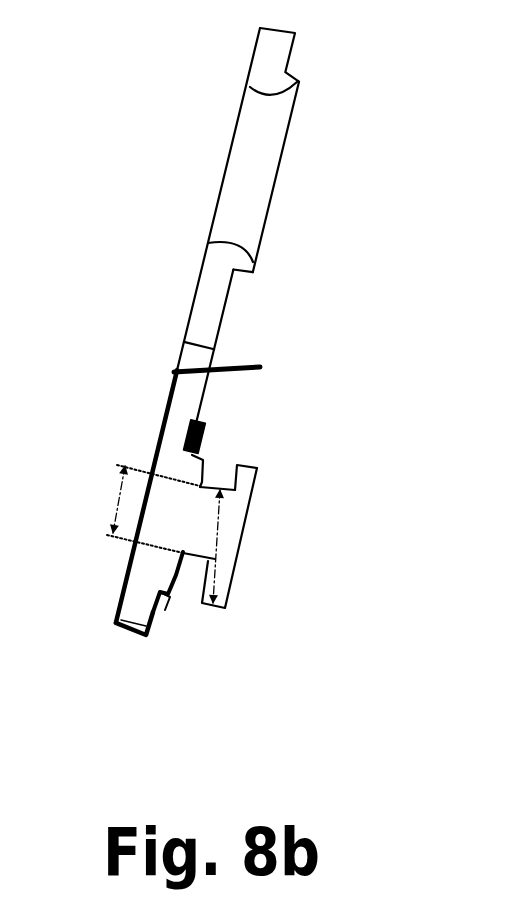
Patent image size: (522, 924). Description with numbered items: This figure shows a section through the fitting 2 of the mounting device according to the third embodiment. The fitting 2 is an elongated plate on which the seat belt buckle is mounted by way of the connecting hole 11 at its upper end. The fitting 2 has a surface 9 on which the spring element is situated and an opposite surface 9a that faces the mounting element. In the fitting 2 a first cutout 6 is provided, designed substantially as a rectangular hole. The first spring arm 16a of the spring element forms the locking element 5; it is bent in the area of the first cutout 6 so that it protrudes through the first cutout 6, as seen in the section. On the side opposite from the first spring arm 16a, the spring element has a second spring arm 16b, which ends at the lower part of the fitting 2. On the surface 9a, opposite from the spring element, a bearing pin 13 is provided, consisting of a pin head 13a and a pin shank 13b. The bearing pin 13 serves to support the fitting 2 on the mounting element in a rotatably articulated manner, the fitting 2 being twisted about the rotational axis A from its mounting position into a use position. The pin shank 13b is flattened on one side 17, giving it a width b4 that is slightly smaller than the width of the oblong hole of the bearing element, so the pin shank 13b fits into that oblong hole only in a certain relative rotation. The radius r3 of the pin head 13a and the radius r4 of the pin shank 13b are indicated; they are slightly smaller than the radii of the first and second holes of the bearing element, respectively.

The fitting 2 is at (263, 62).
The connecting hole 11 is at (255, 152).
The surface 9 is at (202, 262).
The surface 9a is at (233, 285).
The first cutout 6 is at (185, 335).
The locking element 5 is at (252, 365).
The first spring arm 16a is at (172, 377).
The second spring arm 16b is at (113, 625).
The flattened side 17 is at (190, 560).
The bearing pin 13 is at (270, 513).
The pin head 13a is at (253, 471).
The pin shank 13b is at (219, 489).
The rotational axis A is at (233, 539).
The width of the flattened pin shank b4 is at (117, 517).
The radius of the pin shank r4 is at (225, 512).
The radius of the pin head r3 is at (220, 575).